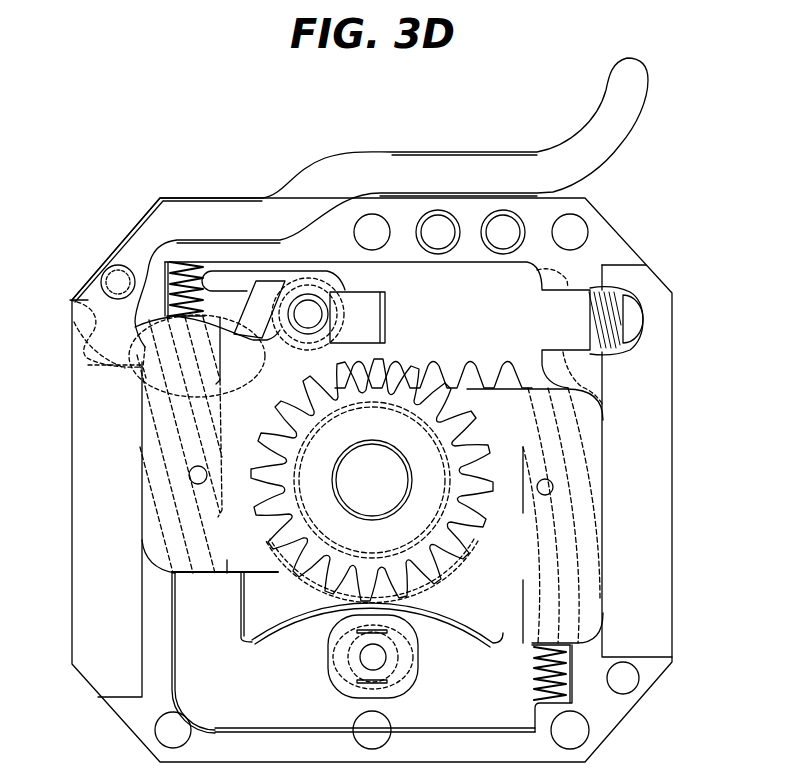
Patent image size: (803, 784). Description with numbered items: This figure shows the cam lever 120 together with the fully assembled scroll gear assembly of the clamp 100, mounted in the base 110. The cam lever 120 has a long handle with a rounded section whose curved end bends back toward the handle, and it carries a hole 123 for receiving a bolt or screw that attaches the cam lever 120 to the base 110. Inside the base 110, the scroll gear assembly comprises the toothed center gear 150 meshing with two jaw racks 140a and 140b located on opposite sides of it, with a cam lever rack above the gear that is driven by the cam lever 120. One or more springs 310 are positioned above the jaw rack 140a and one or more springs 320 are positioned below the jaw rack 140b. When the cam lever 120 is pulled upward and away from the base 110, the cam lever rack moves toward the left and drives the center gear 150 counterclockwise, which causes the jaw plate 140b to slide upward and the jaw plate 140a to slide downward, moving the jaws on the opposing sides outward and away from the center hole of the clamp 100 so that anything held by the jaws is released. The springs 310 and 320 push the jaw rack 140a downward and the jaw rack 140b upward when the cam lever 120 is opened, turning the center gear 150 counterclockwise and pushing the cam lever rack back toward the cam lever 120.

The clamp 100 is at (686, 171).
The base 110 is at (672, 487).
The cam lever 120 is at (357, 150).
The hole 123 is at (118, 282).
The jaw rack 140a is at (227, 558).
The jaw rack 140b is at (512, 623).
The center gear 150 is at (312, 570).
The spring 310 is at (165, 274).
The spring 320 is at (567, 680).